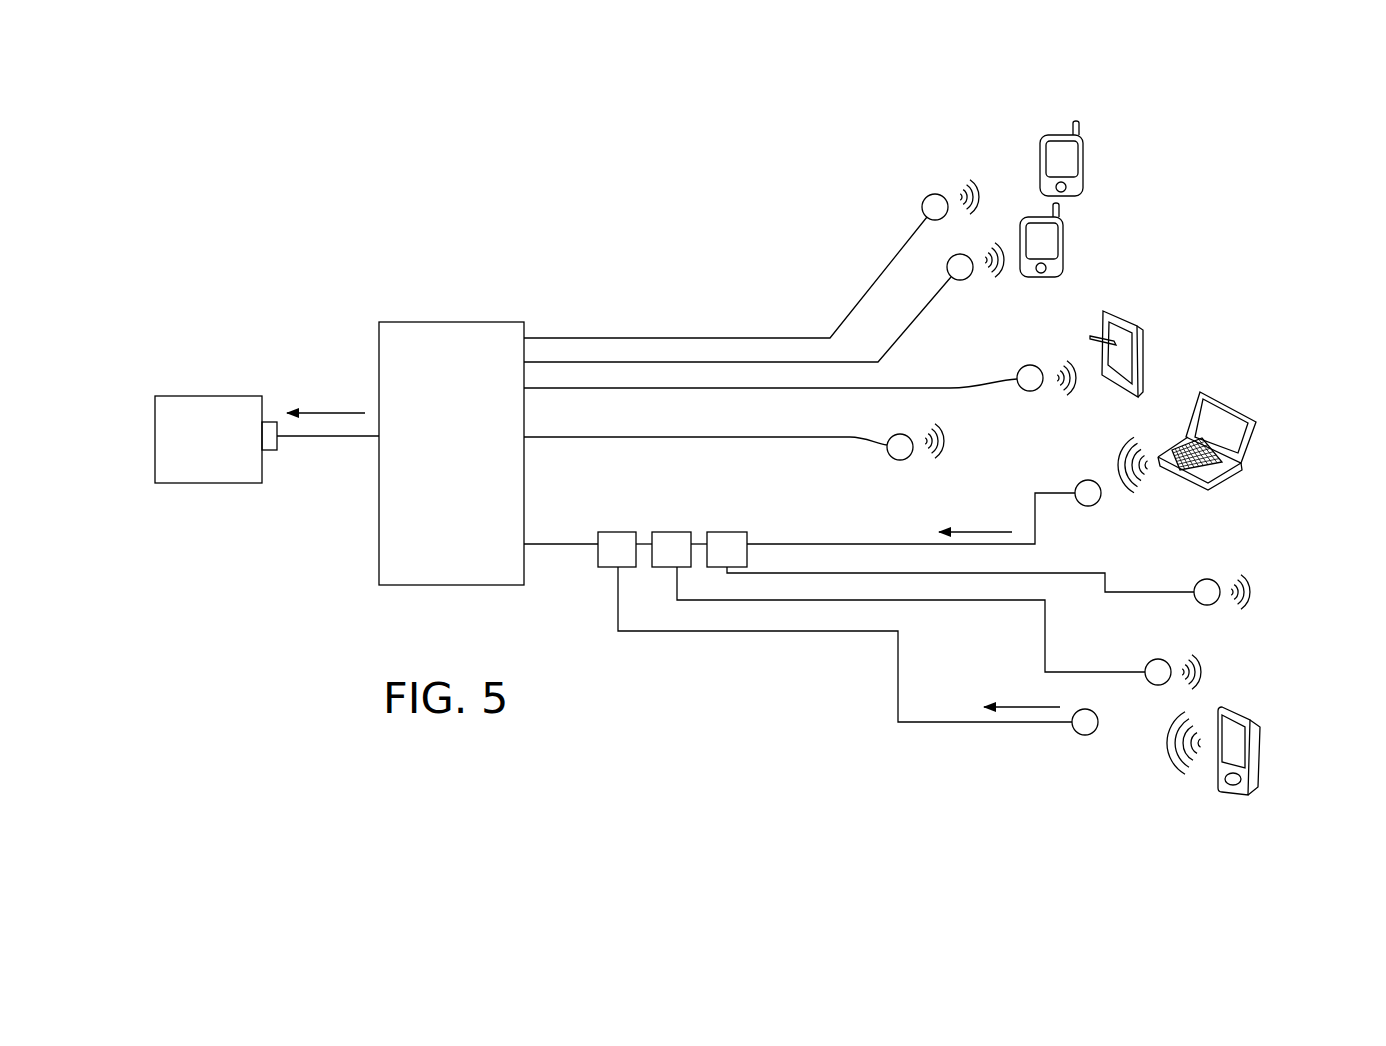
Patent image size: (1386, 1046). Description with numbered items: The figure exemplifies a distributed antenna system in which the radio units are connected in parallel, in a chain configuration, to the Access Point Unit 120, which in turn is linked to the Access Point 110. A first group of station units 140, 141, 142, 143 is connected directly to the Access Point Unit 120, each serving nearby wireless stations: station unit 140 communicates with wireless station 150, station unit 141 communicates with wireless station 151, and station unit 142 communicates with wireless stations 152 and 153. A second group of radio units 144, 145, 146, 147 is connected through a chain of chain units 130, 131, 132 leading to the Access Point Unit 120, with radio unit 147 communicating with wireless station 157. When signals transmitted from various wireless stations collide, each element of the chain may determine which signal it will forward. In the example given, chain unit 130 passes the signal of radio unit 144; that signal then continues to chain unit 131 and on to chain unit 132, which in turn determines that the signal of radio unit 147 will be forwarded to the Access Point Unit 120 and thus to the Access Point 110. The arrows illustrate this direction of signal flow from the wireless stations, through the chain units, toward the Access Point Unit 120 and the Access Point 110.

The Access Point 110 is at (199, 393).
The Access Point Unit 120 is at (451, 319).
The chain unit 130 is at (726, 529).
The chain unit 131 is at (668, 529).
The chain unit 132 is at (616, 529).
The station unit 140 is at (935, 193).
The station unit 141 is at (962, 282).
The station unit 142 is at (1033, 363).
The station unit 143 is at (901, 462).
The radio unit 144 is at (1096, 508).
The radio unit 145 is at (1210, 607).
The radio unit 146 is at (1160, 658).
The radio unit 147 is at (1077, 734).
The wireless station 150 is at (1086, 163).
The wireless station 151 is at (1066, 245).
The wireless station 152 is at (1116, 309).
The wireless station 153 is at (1228, 405).
The wireless station 157 is at (1263, 755).